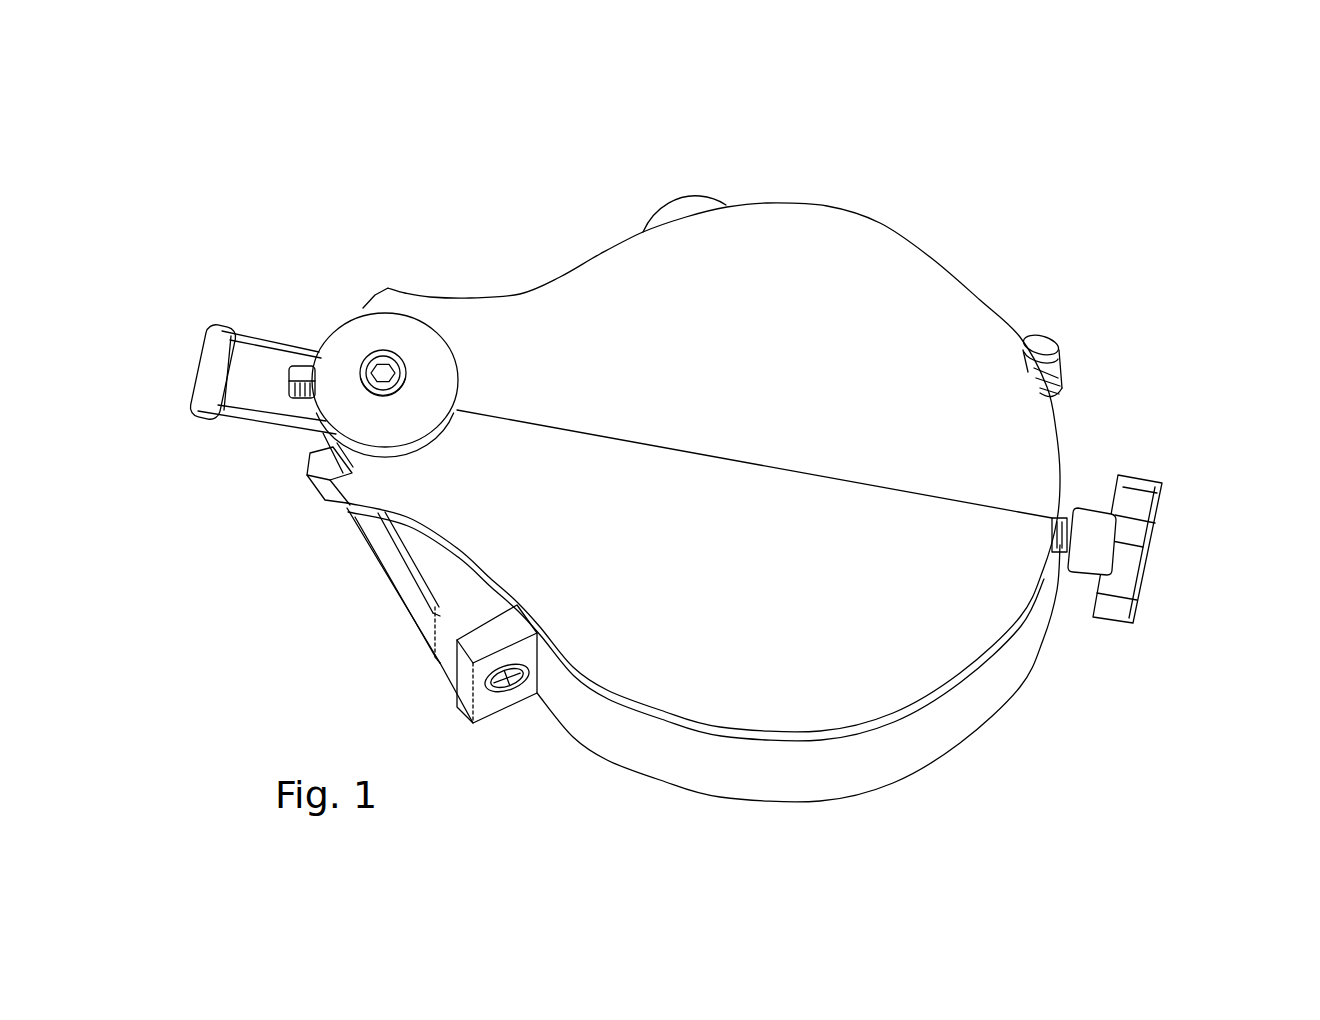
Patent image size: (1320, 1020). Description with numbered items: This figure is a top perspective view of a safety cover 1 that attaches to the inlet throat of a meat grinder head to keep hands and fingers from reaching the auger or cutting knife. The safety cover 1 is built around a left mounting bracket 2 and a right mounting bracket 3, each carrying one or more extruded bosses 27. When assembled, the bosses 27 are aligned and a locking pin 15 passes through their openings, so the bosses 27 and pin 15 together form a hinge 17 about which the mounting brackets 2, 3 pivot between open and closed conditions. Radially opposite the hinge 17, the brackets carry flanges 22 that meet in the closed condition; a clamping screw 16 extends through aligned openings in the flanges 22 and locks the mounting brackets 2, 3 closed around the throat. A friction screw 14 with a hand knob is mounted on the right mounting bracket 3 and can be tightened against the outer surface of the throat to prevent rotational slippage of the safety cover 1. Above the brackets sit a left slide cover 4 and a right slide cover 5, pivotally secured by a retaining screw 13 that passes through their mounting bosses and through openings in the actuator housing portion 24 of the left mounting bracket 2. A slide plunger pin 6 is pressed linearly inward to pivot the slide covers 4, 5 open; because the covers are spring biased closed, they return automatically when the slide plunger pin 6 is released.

The safety cover 1 is at (1019, 186).
The left mounting bracket 2 is at (428, 606).
The right mounting bracket 3 is at (985, 688).
The left slide cover 4 is at (766, 246).
The right slide cover 5 is at (712, 690).
The slide plunger pin 6 is at (258, 362).
The retaining screw 13 is at (389, 341).
The friction screw 14 is at (1160, 515).
The locking pin 15 is at (1049, 332).
The clamping screw 16 is at (503, 689).
The hinge 17 is at (1095, 330).
The flanges 22 is at (440, 662).
The actuator housing portion 24 is at (357, 572).
The extruded bosses 27 is at (1072, 370).